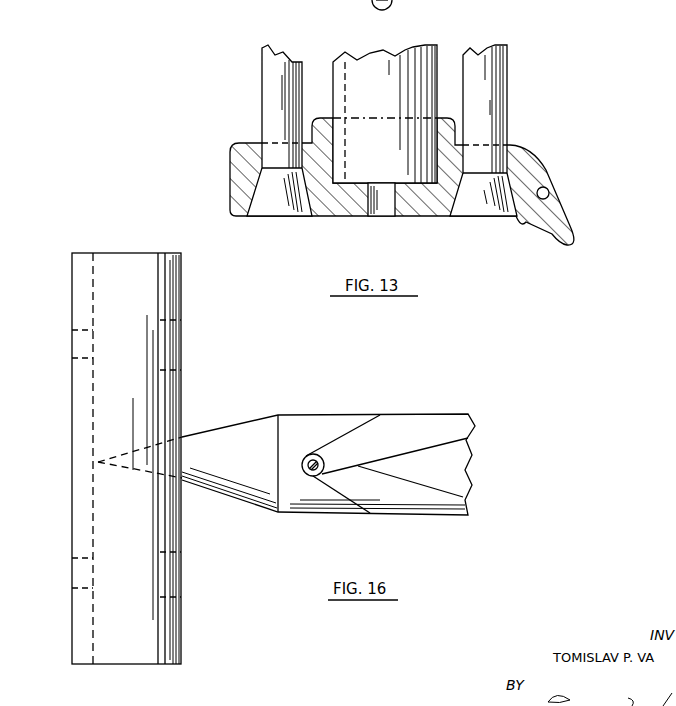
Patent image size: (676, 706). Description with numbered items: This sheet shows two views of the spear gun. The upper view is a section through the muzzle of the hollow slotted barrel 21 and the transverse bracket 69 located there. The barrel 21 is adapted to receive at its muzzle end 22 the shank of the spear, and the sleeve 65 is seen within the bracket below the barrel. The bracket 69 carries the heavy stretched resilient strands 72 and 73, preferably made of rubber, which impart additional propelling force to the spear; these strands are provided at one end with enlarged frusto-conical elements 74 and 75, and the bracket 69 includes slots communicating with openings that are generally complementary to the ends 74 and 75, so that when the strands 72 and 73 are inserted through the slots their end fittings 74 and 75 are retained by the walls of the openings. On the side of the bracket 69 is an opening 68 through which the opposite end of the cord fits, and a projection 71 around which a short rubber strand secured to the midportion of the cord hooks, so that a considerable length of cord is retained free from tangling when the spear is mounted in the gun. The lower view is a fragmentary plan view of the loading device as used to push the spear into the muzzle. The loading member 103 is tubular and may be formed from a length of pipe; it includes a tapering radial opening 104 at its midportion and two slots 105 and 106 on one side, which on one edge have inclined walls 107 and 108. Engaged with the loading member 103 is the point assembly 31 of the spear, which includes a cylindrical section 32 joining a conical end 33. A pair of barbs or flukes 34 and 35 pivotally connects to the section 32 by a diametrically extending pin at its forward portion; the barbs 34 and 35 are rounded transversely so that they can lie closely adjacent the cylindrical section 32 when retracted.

In FIG. 13, the hollow slotted barrel 21 is at (404, 49).
In FIG. 13, the muzzle end 22 is at (400, 200).
In FIG. 13, the sleeve insert 65 is at (386, 206).
In FIG. 13, the opening 68 is at (549, 188).
In FIG. 13, the transverse bracket 69 is at (218, 147).
In FIG. 13, the projection 71 is at (574, 227).
In FIG. 13, the resilient strand 72 is at (272, 78).
In FIG. 13, the resilient strand 73 is at (497, 72).
In FIG. 13, the frusto-conical element 74 is at (264, 198).
In FIG. 13, the frusto-conical element 75 is at (478, 208).
In FIG. 16, the point assembly 31 is at (320, 516).
In FIG. 16, the cylindrical section 32 is at (305, 426).
In FIG. 16, the conical end 33 is at (216, 441).
In FIG. 16, the barb 34 is at (410, 424).
In FIG. 16, the barb 35 is at (398, 500).
In FIG. 16, the loading unit 103 is at (68, 305).
In FIG. 16, the tapering radial opening 104 is at (184, 415).
In FIG. 16, the slot 105 is at (88, 350).
In FIG. 16, the slot 106 is at (85, 585).
In FIG. 16, the inclined wall 107 is at (172, 320).
In FIG. 16, the inclined wall 108 is at (172, 560).